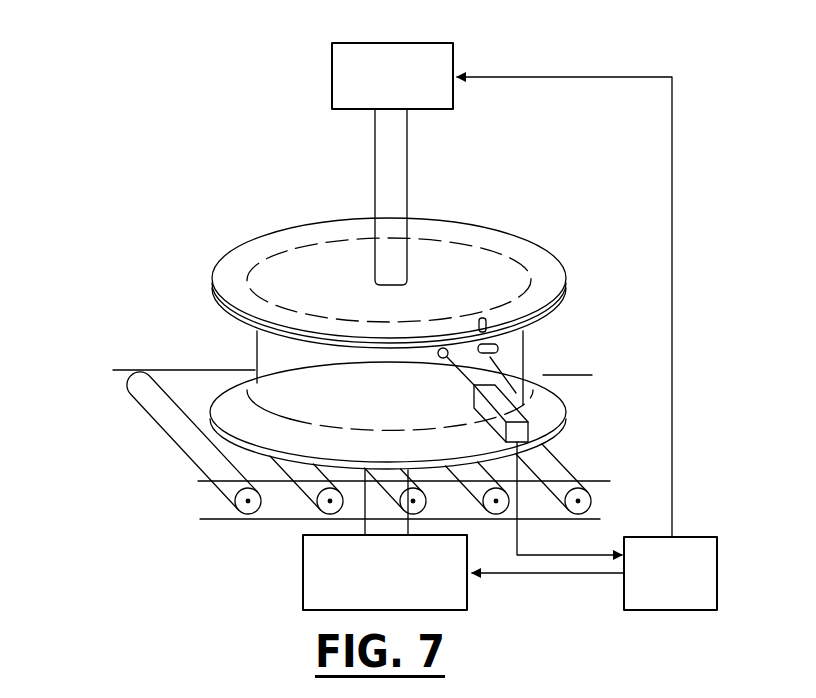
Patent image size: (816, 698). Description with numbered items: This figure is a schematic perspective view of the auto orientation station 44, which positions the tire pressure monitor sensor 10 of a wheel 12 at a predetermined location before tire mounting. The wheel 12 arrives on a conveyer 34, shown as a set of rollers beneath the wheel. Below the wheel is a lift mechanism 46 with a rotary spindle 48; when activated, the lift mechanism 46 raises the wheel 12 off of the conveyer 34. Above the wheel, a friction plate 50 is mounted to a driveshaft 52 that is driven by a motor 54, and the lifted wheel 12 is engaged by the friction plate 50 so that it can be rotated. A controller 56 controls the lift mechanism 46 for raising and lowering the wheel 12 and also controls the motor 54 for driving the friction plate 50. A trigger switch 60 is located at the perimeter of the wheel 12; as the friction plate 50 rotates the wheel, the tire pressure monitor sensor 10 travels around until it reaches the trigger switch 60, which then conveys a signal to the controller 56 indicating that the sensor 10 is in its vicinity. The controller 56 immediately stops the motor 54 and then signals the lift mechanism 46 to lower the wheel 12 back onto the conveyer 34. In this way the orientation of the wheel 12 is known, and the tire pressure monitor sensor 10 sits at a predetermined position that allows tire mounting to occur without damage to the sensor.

The motor 54 is at (449, 62).
The driveshaft 52 is at (401, 186).
The friction plate 50 is at (511, 243).
The wheel 12 is at (273, 385).
The tire pressure monitor sensor 10 is at (500, 363).
The trigger switch 60 is at (510, 405).
The conveyer 34 is at (170, 366).
The rotary spindle 48 is at (365, 524).
The lift mechanism 46 is at (312, 583).
The controller 56 is at (718, 553).
The auto orientation station 44 is at (281, 179).